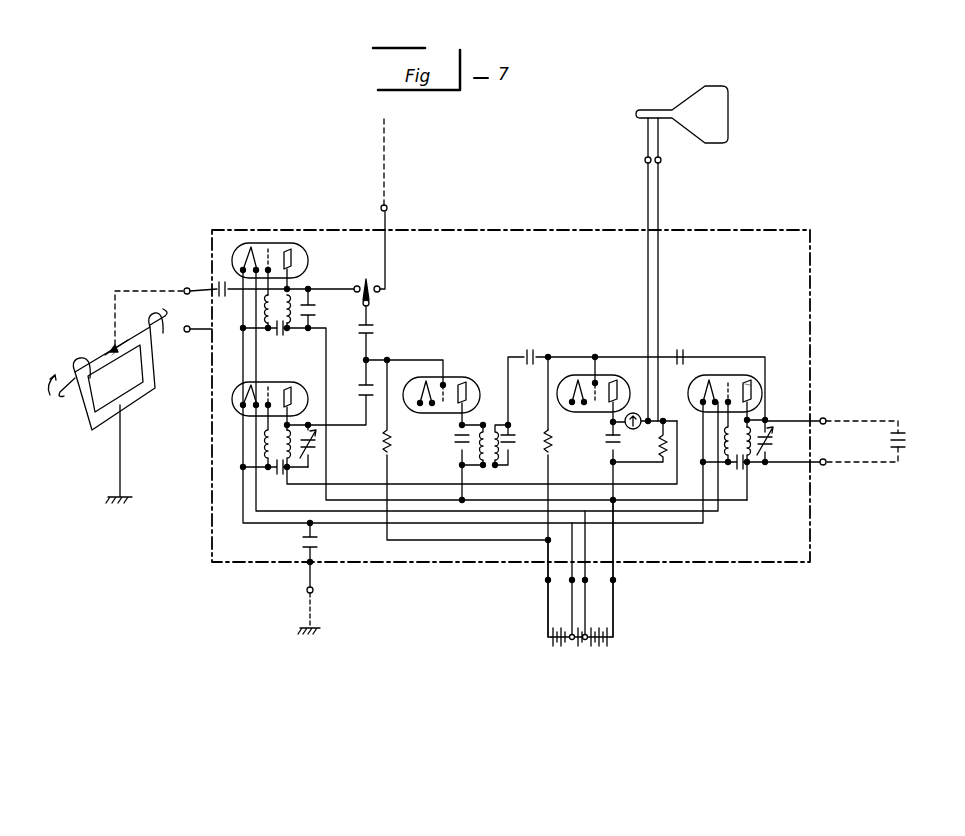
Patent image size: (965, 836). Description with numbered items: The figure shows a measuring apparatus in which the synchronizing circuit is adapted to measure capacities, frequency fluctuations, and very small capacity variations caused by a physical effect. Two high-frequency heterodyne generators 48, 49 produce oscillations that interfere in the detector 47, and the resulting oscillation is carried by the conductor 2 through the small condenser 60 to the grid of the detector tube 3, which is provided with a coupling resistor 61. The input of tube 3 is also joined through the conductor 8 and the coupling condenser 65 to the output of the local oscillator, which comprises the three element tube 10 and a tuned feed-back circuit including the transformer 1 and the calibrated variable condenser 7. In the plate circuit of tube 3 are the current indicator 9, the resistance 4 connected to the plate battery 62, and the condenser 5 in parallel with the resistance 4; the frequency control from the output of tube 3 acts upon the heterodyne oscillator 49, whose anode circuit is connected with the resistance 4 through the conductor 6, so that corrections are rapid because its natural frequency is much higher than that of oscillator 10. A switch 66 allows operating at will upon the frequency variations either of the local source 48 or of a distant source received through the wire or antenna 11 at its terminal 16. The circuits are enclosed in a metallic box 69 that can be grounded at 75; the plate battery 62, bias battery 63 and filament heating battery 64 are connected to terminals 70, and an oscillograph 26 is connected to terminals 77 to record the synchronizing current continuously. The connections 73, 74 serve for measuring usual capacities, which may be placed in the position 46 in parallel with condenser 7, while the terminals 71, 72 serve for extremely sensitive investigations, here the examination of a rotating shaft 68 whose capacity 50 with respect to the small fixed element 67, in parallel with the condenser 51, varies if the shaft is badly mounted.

The transformer 1 is at (738, 448).
The conductor 2 is at (517, 400).
The detector tube 3 is at (606, 372).
The resistance 4 is at (655, 440).
The condenser 5 is at (608, 445).
The conductor 6 is at (345, 482).
The variable condenser 7 is at (775, 448).
The conductor 8 is at (740, 365).
The current indicator 9 is at (640, 415).
The three element tube 10 is at (740, 372).
The antenna 11 is at (390, 133).
The antenna terminal 16 is at (388, 208).
The oscillograph 26 is at (712, 95).
The position 46 is at (908, 440).
The detector 47 is at (457, 372).
The heterodyne generator 48 is at (308, 262).
The heterodyne oscillator 49 is at (280, 378).
The capacity 50 is at (112, 352).
The condenser 51 is at (315, 312).
The condenser 60 is at (540, 345).
The coupling resistor 61 is at (540, 453).
The plate battery 62 is at (605, 650).
The bias battery 63 is at (550, 648).
The filament heating battery 64 is at (578, 650).
The coupling condenser 65 is at (685, 345).
The switch 66 is at (374, 304).
The small fixed element 67 is at (113, 345).
The rotating shaft 68 is at (105, 363).
The metallic box 69 is at (810, 326).
The terminals 70 is at (626, 580).
The terminal 71 is at (187, 283).
The terminal 72 is at (187, 336).
The connection 73 is at (826, 415).
The connection 74 is at (826, 470).
The ground connection 75 is at (316, 596).
The terminals 77 is at (673, 160).